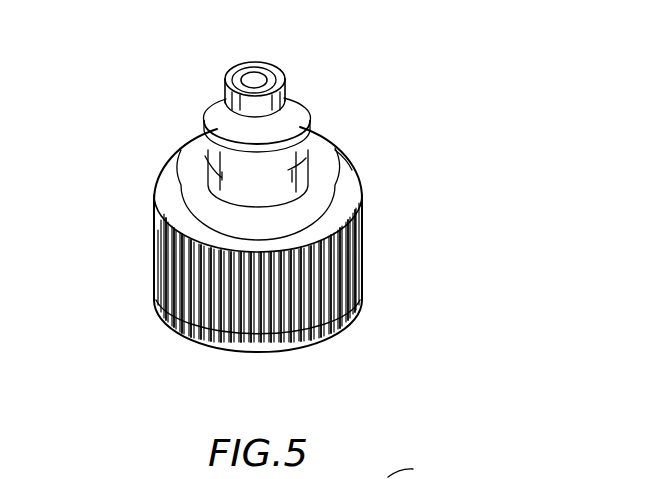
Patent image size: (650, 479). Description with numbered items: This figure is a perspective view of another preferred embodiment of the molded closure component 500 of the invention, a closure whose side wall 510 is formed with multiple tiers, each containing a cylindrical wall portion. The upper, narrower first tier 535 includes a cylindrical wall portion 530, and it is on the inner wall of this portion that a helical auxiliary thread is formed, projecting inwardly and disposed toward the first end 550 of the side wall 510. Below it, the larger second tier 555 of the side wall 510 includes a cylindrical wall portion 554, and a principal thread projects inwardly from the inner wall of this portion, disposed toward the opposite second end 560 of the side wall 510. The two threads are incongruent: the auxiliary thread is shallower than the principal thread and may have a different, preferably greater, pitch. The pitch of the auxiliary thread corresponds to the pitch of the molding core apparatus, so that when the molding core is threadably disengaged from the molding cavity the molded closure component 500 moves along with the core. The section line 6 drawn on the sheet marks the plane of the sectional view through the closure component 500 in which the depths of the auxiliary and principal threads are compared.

The molded closure component 500 is at (371, 239).
The side wall 510 is at (177, 310).
The cylindrical wall portion 530 is at (300, 111).
The first tier 535 is at (222, 92).
The first end 550 is at (263, 67).
The cylindrical wall portion 554 is at (163, 252).
The second tier 555 is at (368, 207).
The second end 560 is at (274, 348).
The section line 6- 6 is at (72, 58).